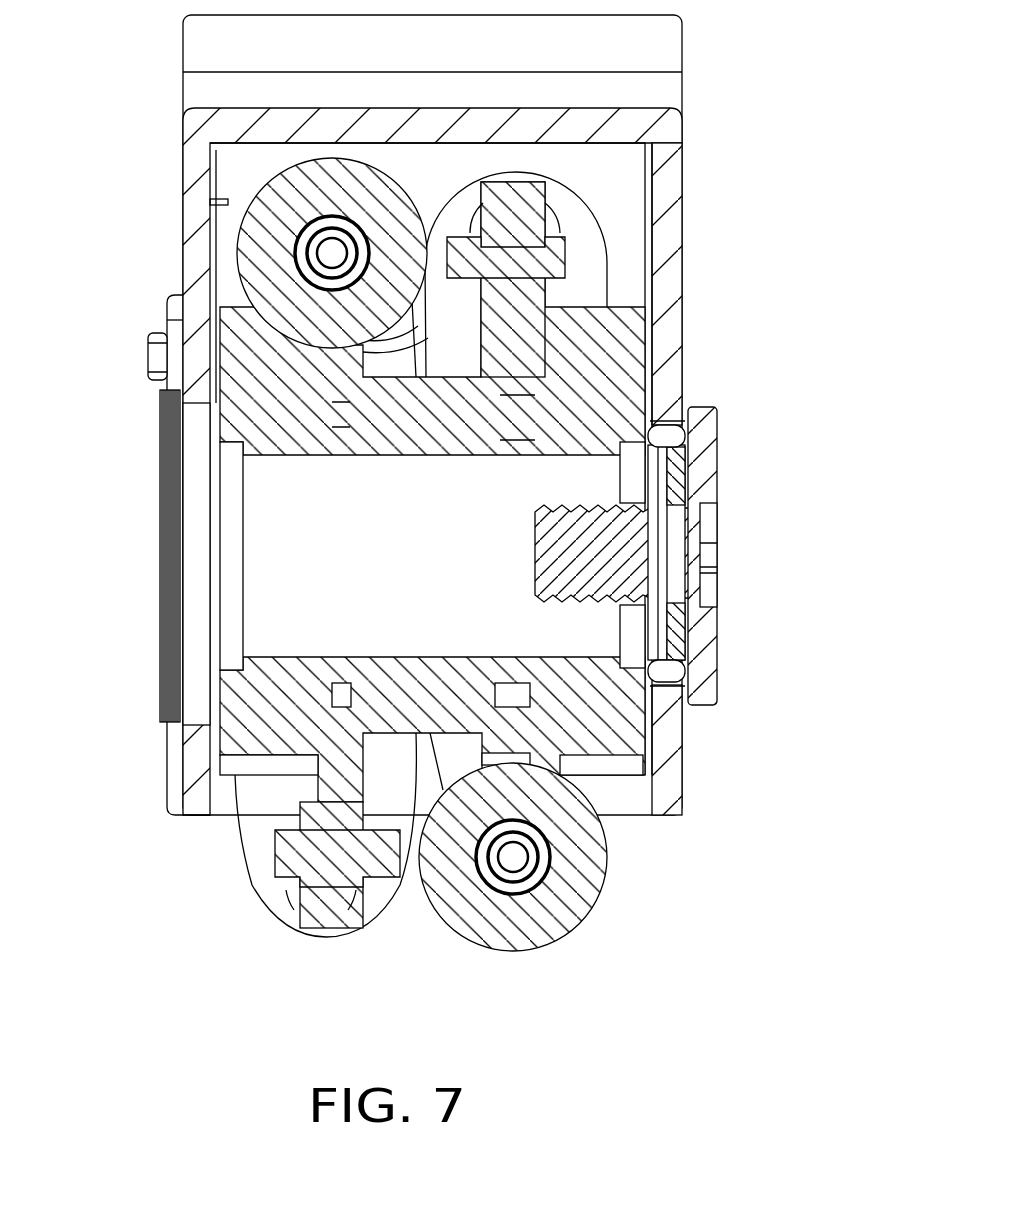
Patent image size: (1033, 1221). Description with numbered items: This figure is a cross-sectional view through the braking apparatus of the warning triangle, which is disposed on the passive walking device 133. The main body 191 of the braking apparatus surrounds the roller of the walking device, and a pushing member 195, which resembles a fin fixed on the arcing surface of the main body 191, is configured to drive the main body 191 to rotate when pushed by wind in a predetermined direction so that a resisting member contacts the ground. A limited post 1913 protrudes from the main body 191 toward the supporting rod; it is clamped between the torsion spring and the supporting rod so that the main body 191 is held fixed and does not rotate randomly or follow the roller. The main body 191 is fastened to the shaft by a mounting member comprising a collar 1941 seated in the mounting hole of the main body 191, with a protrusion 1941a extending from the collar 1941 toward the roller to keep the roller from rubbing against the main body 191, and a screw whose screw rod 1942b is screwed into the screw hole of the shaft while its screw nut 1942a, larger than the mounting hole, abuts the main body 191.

The pushing member 195 is at (660, 45).
The main body 191 is at (667, 240).
The passive walking device 133 is at (597, 357).
The limited post 1913 is at (150, 355).
The collar 1941 is at (677, 492).
The protrusion 1941a is at (660, 437).
The screw nut 1942a is at (705, 655).
The screw rod 1942b is at (640, 572).